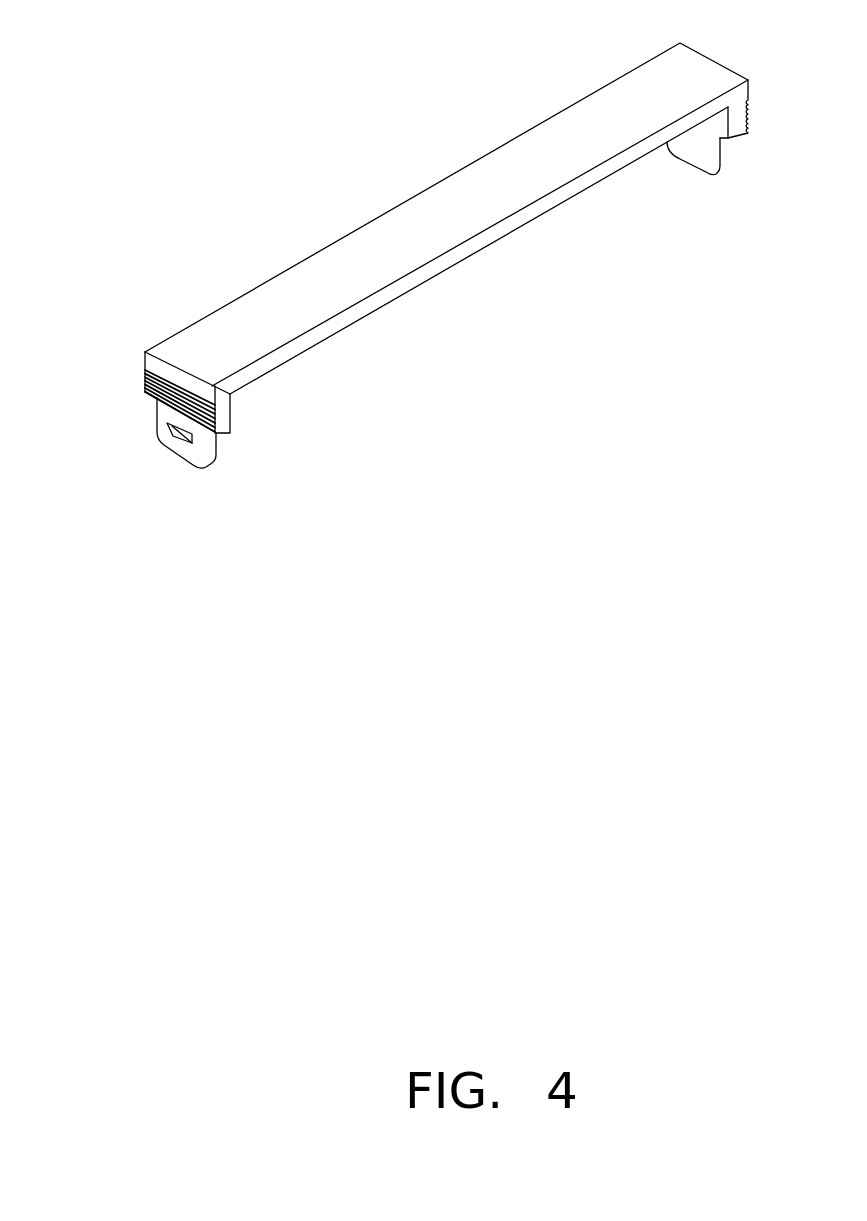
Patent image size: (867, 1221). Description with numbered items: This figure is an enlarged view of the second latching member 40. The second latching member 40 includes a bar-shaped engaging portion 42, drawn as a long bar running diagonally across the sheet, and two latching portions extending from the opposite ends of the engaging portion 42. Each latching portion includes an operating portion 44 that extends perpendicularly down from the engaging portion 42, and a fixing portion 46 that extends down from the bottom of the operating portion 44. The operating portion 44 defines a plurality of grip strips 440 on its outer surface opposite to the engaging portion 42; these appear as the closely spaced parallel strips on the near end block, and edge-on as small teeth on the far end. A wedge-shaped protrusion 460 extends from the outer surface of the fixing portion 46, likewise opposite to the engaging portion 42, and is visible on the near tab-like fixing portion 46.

The second latching member 40 is at (395, 285).
The engaging portion 42 is at (332, 272).
The operating portion 44 is at (395, 258).
The grip strips 440 is at (155, 394).
The fixing portion 46 is at (418, 333).
The wedge-shaped protrusion 460 is at (177, 433).